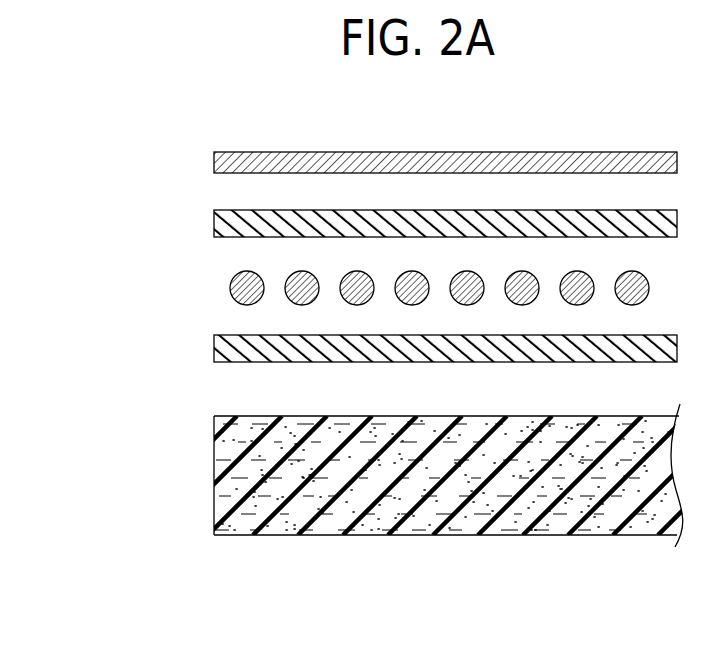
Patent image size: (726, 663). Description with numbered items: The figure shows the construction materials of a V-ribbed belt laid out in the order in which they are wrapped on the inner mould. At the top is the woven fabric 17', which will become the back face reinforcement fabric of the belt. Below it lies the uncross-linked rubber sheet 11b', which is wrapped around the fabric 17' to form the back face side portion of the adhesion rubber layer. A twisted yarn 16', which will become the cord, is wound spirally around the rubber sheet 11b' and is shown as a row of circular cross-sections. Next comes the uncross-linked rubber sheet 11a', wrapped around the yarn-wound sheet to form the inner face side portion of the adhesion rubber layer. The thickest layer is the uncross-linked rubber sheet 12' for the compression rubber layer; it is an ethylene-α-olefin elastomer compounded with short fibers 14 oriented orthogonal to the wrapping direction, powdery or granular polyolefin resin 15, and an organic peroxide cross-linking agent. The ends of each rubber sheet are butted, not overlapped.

The woven fabric 17' is at (399, 160).
The uncross-linked rubber sheet 11b' is at (392, 224).
The twisted yarn 16' is at (385, 287).
The uncross-linked rubber sheet 11a' is at (392, 349).
The uncross-linked rubber sheet 12' is at (422, 501).
The short fibers 14 is at (390, 470).
The polyolefin resin 15 is at (517, 487).